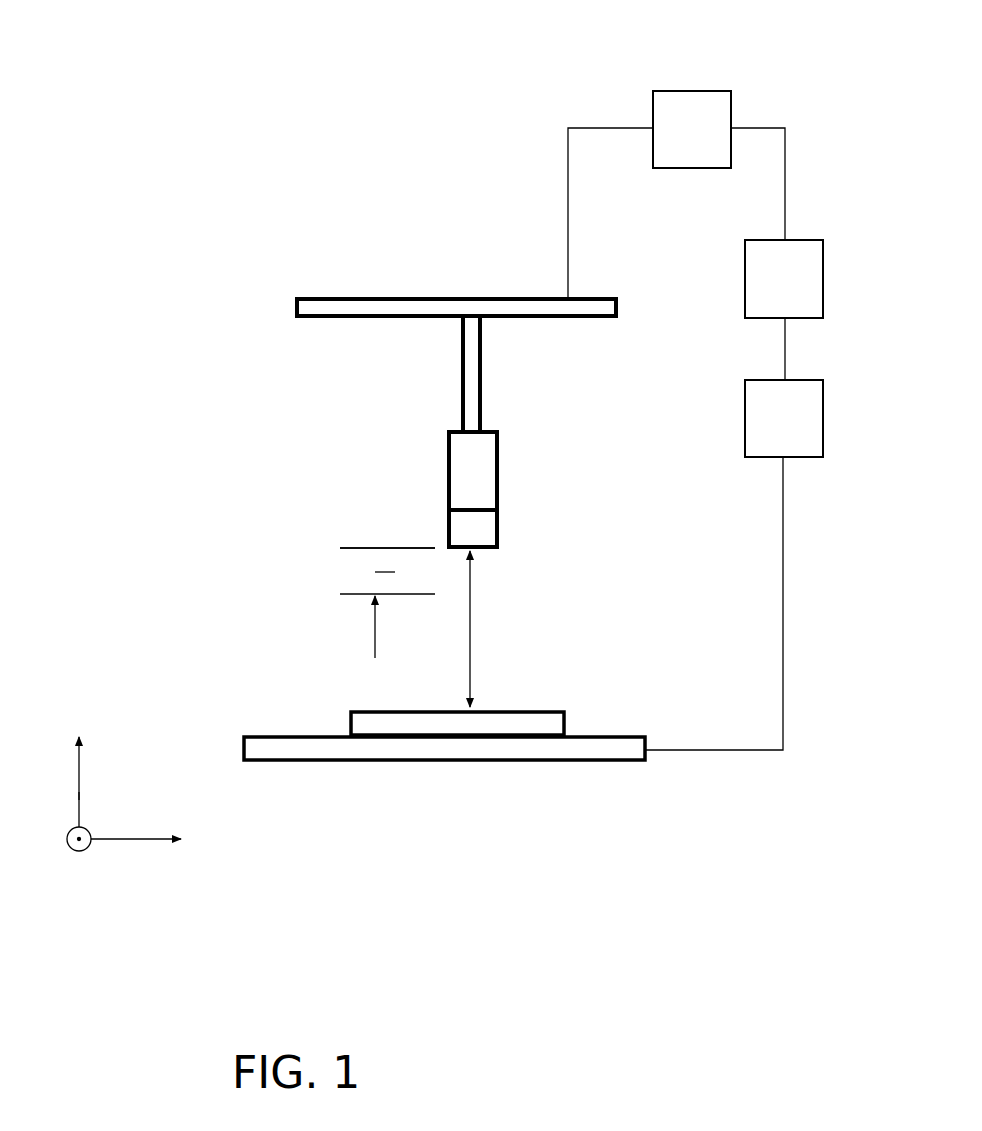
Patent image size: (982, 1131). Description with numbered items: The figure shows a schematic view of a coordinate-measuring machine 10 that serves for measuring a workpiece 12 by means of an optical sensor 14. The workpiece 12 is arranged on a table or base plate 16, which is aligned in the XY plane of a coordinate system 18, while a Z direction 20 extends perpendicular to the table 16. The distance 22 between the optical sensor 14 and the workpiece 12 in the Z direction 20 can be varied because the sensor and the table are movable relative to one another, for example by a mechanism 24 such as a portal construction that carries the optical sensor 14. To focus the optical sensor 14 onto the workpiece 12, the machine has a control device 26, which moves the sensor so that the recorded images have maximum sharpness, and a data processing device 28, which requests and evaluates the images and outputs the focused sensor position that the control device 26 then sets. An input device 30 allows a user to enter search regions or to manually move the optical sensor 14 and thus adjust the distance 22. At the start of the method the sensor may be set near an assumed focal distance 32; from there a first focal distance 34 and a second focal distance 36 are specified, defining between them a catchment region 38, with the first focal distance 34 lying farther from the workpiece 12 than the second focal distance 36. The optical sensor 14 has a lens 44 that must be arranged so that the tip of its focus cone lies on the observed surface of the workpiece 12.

The coordinate-measuring machine 10 is at (236, 205).
The workpiece 12 is at (485, 728).
The optical sensor 14 is at (485, 450).
The table or base plate 16 is at (605, 760).
The coordinate system 18 is at (78, 864).
The Z direction 20 is at (80, 792).
The distance 22 is at (470, 630).
The mechanism 24 is at (350, 308).
The control device 26 is at (676, 194).
The data processing device 28 is at (784, 310).
The input device 30 is at (734, 565).
The assumed focal distance 32 is at (372, 572).
The first focal distance 34 is at (363, 547).
The second focal distance 36 is at (365, 594).
The catchment region 38 is at (375, 545).
The lens 44 is at (485, 535).